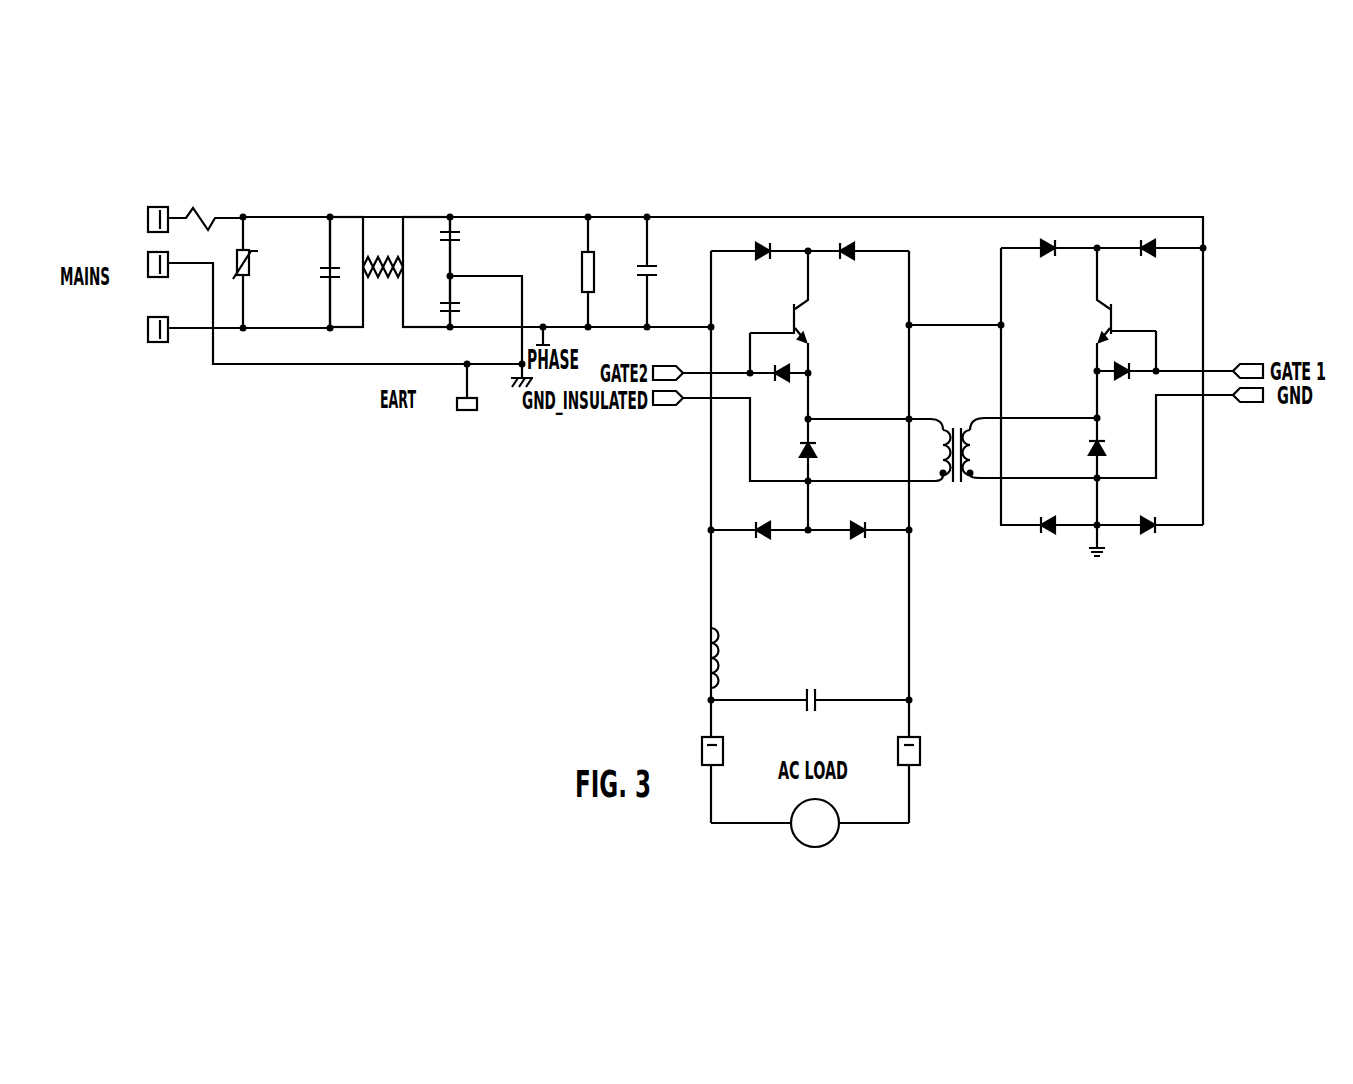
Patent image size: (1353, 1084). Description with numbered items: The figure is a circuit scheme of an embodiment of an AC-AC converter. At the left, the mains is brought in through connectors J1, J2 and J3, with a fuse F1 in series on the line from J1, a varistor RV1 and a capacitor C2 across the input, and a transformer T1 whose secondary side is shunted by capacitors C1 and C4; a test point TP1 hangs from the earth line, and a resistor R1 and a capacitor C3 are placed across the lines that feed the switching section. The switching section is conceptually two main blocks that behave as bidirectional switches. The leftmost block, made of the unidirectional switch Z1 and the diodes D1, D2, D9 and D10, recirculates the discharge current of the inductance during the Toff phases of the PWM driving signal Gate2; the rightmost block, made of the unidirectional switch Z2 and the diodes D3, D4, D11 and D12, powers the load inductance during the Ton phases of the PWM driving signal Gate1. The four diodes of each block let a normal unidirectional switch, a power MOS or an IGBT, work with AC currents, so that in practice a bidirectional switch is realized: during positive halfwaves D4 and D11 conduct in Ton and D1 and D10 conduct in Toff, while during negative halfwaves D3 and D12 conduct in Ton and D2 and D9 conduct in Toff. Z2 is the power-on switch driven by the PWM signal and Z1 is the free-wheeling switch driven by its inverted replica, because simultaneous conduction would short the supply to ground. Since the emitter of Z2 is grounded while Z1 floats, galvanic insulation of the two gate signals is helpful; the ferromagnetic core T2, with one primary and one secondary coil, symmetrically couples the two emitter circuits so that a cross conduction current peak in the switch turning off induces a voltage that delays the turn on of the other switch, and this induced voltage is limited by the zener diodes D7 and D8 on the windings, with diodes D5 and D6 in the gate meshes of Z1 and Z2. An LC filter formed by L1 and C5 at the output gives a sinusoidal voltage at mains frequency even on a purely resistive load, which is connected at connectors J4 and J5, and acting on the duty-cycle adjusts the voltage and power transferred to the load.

The mains connector J1 is at (152, 220).
The mains connector J2 is at (147, 266).
The mains connector J3 is at (147, 331).
The fuse F1 is at (210, 202).
The varistor RV1 is at (264, 272).
The capacitor C2 is at (321, 272).
The transformer T1 is at (390, 258).
The capacitor C1 is at (439, 246).
The capacitor C4 is at (439, 301).
The test point TP1 is at (468, 402).
The resistor R1 is at (604, 272).
The capacitor C3 is at (659, 272).
The diode D1 is at (750, 239).
The diode D2 is at (861, 239).
The unidirectional switch Z1 is at (789, 312).
The diode D5 is at (782, 388).
The diode D7 is at (822, 451).
The diode D9 is at (753, 515).
The diode D10 is at (860, 515).
The ferromagnetic core T2 is at (953, 428).
The inductor L1 is at (730, 658).
The capacitor C5 is at (809, 677).
The load connector J4 is at (697, 761).
The load connector J5 is at (900, 761).
The diode D3 is at (1062, 237).
The diode D4 is at (1164, 237).
The unidirectional switch Z2 is at (1115, 309).
The diode D6 is at (1124, 389).
The diode D8 is at (1081, 448).
The diode D11 is at (1050, 510).
The diode D12 is at (1155, 510).